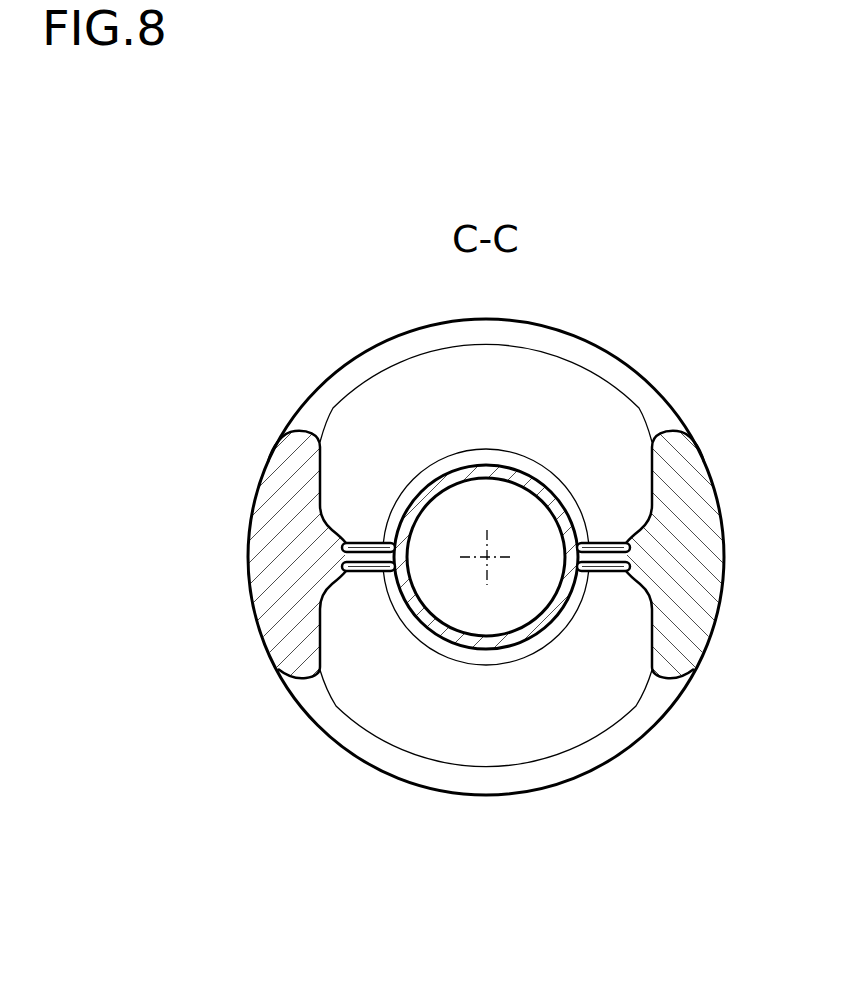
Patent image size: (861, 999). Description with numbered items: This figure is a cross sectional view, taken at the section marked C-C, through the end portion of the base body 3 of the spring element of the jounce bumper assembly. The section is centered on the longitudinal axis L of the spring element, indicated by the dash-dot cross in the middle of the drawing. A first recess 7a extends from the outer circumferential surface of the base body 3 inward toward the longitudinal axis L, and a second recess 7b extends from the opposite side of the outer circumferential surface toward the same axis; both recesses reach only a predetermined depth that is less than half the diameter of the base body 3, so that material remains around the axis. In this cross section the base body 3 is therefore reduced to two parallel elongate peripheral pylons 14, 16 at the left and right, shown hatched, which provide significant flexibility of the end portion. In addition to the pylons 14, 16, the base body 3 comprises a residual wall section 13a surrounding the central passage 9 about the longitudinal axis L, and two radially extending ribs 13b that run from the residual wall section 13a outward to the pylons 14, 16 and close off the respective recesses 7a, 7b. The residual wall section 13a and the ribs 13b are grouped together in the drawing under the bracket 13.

The base body 3 is at (250, 523).
The first recess 7a is at (458, 738).
The second recess 7b is at (425, 378).
The passage 9 is at (457, 527).
The support structure 13 is at (489, 701).
The residual wall section 13a is at (492, 649).
The radially extending ribs 13b is at (592, 577).
The pylon 14 is at (250, 644).
The pylon 16 is at (722, 651).
The longitudinal axis L is at (487, 548).